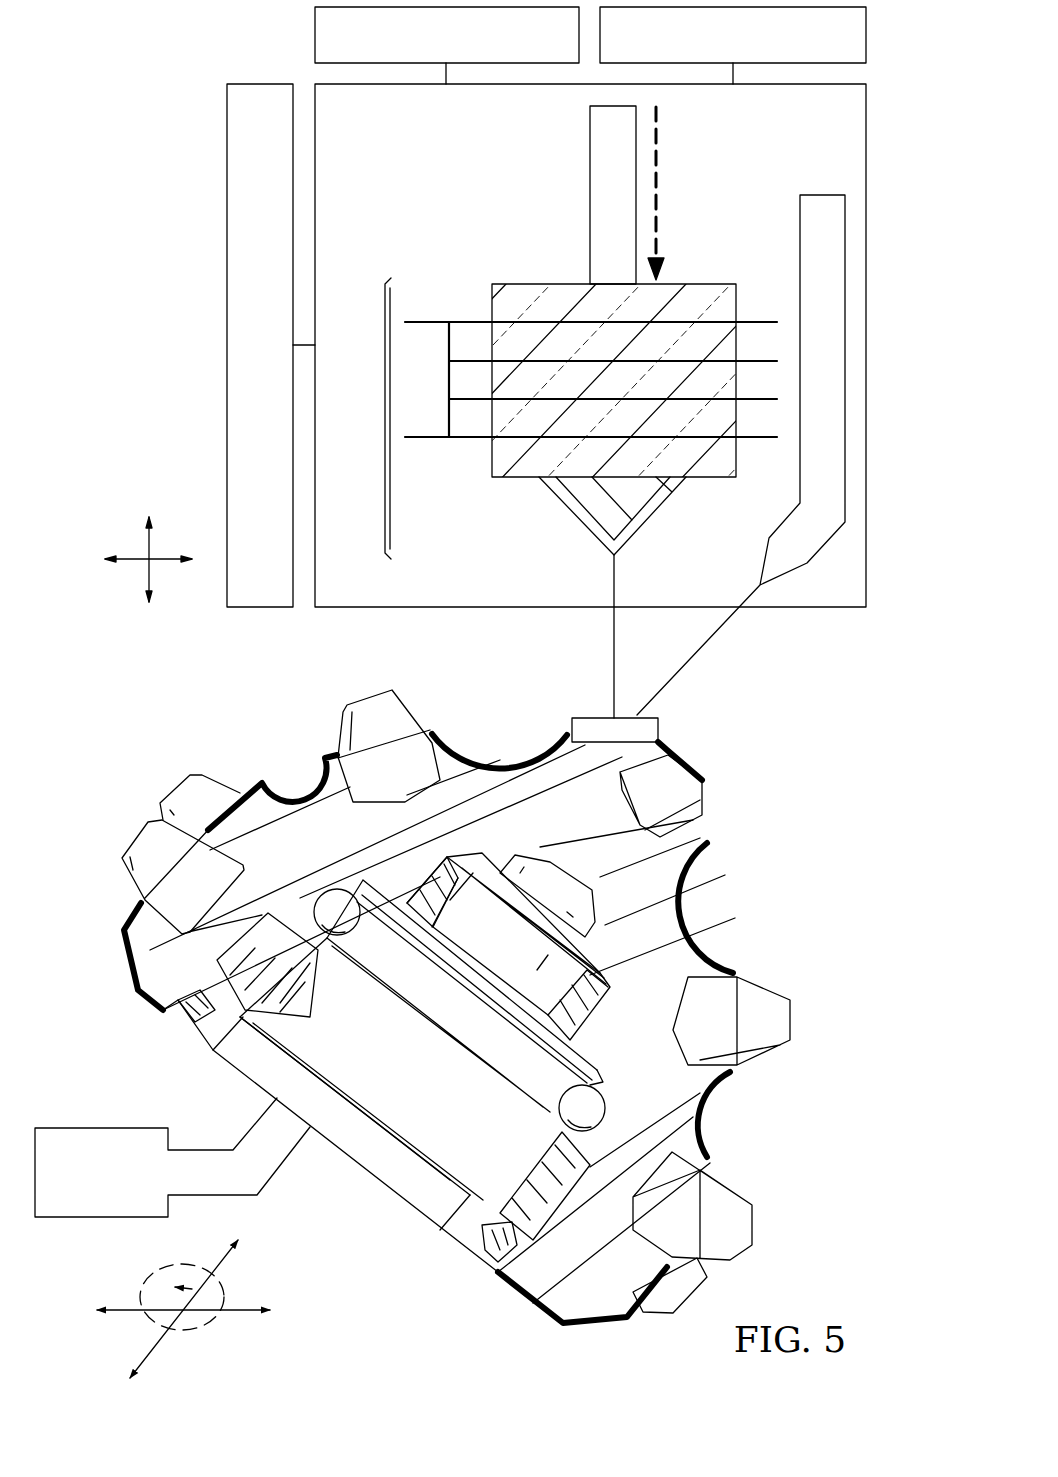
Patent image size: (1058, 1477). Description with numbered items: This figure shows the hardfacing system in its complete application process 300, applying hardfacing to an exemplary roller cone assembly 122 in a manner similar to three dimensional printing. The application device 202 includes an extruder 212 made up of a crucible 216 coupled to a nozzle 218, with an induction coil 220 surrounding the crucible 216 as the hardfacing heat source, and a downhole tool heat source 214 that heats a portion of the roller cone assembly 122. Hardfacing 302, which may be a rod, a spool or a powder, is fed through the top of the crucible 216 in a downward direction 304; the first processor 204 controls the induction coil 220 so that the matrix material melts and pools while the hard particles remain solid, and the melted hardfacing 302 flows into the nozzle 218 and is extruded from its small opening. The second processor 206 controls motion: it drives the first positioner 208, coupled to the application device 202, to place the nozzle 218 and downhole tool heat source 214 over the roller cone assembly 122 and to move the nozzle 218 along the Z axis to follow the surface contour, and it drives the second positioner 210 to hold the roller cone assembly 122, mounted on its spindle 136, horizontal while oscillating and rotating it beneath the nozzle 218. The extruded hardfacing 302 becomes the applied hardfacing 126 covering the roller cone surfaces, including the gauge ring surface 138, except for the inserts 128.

The roller cone assembly 122 is at (692, 1096).
The hardfacing 126 is at (512, 757).
The inserts 128 is at (380, 692).
The spindle 136 is at (384, 1095).
The gauge ring surface 138 is at (172, 1000).
The application device 202 is at (401, 181).
The first processor 204 is at (428, 49).
The second processor 206 is at (715, 49).
The first positioner 208 is at (241, 357).
The second positioner 210 is at (82, 1185).
The extruder 212 is at (368, 419).
The downhole tool heat source 214 is at (823, 196).
The crucible 216 is at (700, 284).
The nozzle 218 is at (578, 517).
The induction coil 220 is at (754, 322).
The complete application process 300 is at (117, 104).
The hardfacing 302 is at (590, 196).
The downward direction 304 is at (660, 176).